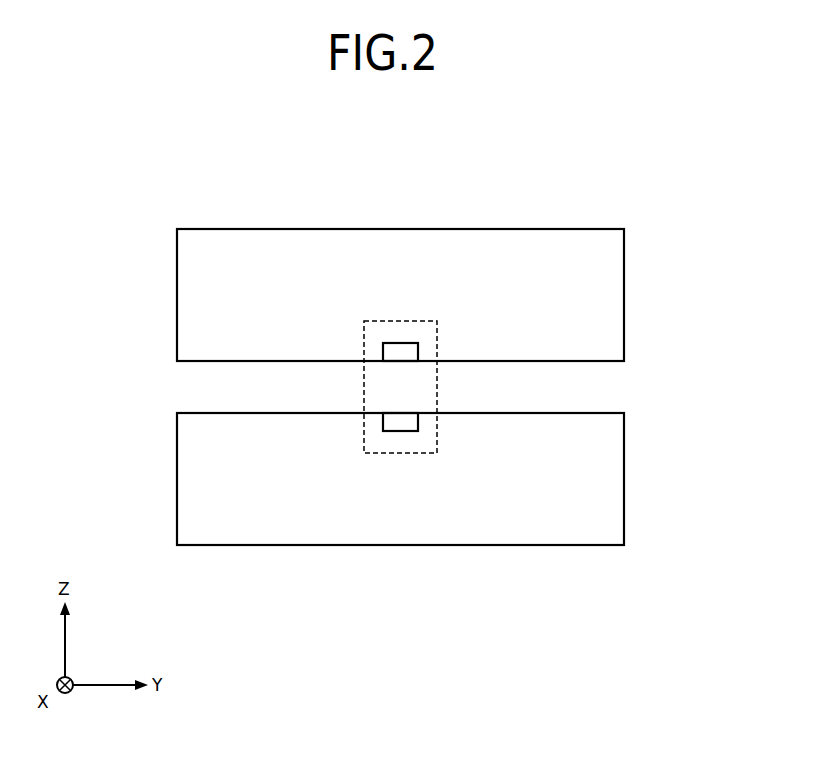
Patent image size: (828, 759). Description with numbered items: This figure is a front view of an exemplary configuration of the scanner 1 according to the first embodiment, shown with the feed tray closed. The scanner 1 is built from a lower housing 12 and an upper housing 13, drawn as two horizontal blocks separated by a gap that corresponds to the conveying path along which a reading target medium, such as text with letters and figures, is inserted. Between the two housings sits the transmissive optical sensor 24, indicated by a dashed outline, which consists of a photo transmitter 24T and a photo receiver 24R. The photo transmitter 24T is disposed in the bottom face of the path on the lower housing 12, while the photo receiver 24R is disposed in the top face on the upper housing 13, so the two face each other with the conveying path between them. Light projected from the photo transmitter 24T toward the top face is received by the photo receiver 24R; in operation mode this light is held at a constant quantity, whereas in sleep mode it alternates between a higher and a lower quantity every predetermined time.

The scanner 1 is at (406, 163).
The lower housing 12 is at (624, 513).
The upper housing 13 is at (624, 262).
The transmissive optical sensor 24 is at (425, 453).
The photo receiver 24R is at (401, 343).
The photo transmitter 24T is at (400, 431).